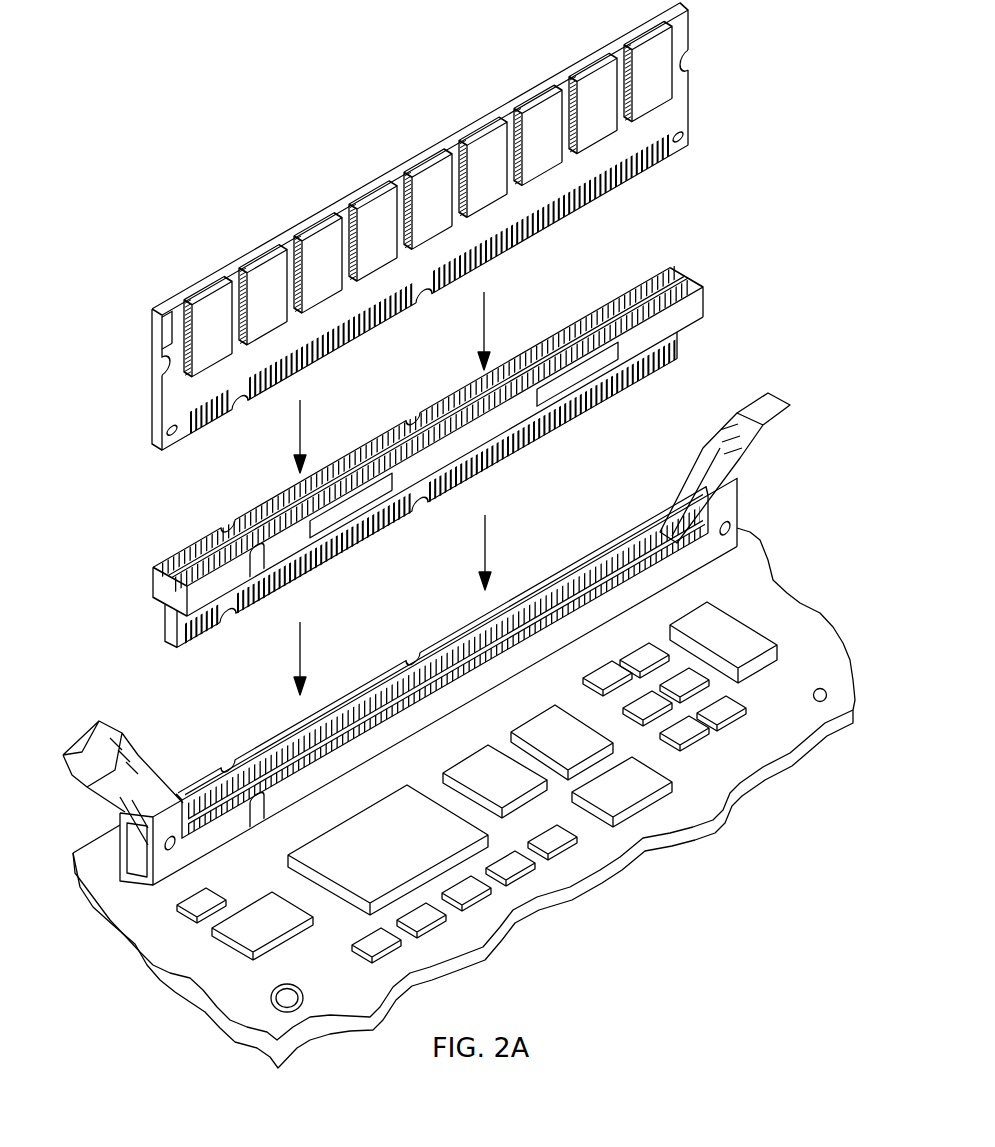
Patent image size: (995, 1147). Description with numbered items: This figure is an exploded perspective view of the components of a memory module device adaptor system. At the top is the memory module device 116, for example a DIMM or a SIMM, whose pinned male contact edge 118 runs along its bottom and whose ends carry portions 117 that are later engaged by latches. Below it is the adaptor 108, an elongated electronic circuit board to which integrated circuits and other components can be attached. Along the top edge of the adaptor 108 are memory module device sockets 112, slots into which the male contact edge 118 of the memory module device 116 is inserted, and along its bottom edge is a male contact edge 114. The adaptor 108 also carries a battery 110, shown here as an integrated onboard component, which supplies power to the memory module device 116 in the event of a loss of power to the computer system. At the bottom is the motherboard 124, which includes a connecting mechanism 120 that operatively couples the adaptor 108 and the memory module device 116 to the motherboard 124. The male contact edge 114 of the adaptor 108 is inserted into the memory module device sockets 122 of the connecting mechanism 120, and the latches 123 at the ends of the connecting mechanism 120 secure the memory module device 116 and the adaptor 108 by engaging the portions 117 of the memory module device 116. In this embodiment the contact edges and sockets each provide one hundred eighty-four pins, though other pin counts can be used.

The adaptor 108 is at (150, 607).
The battery 110 is at (578, 377).
The memory module device sockets 112 is at (672, 278).
The male contact edge 114 is at (672, 365).
The memory module device 116 is at (190, 246).
The portions 117 is at (711, 36).
The male contact edge 118 is at (557, 220).
The connecting mechanism 120 is at (760, 520).
The memory module device sockets 122 is at (601, 572).
The latches 123 is at (676, 458).
The motherboard 124 is at (790, 594).